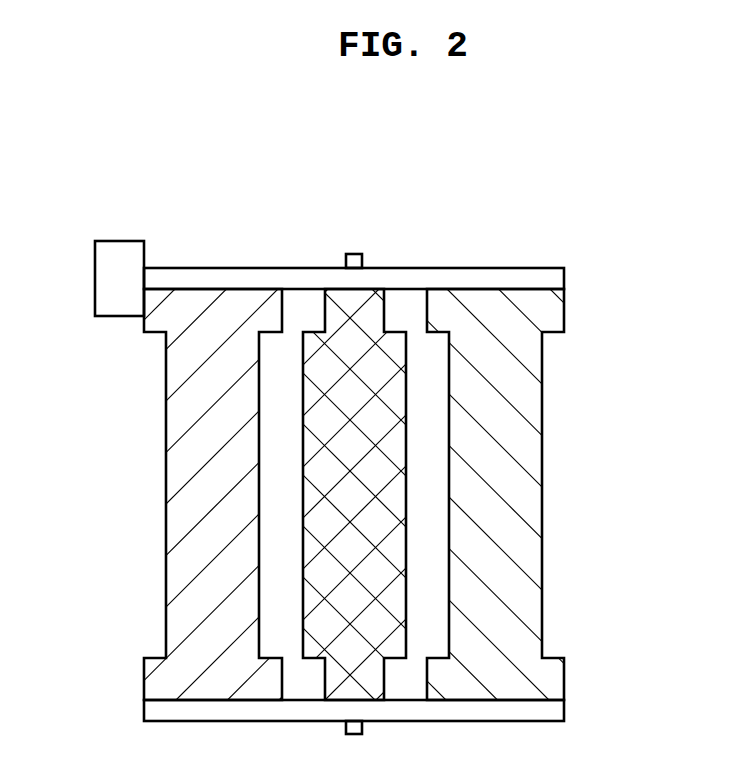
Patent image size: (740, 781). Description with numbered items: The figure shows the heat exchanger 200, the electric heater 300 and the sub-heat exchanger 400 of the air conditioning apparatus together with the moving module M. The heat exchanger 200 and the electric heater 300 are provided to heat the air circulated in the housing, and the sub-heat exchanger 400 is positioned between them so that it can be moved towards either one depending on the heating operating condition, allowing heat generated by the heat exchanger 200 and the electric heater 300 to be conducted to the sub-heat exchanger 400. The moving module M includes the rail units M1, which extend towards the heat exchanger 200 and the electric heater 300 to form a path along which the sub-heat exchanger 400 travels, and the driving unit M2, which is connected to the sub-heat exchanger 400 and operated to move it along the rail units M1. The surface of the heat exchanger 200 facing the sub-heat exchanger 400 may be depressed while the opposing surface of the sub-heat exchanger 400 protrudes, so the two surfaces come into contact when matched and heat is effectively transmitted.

The moving module M is at (321, 445).
The rail units M1 is at (263, 268).
The driving unit M2 is at (122, 262).
The heat exchanger 200 is at (190, 479).
The electric heater 300 is at (523, 510).
The sub-heat exchanger 400 is at (375, 438).